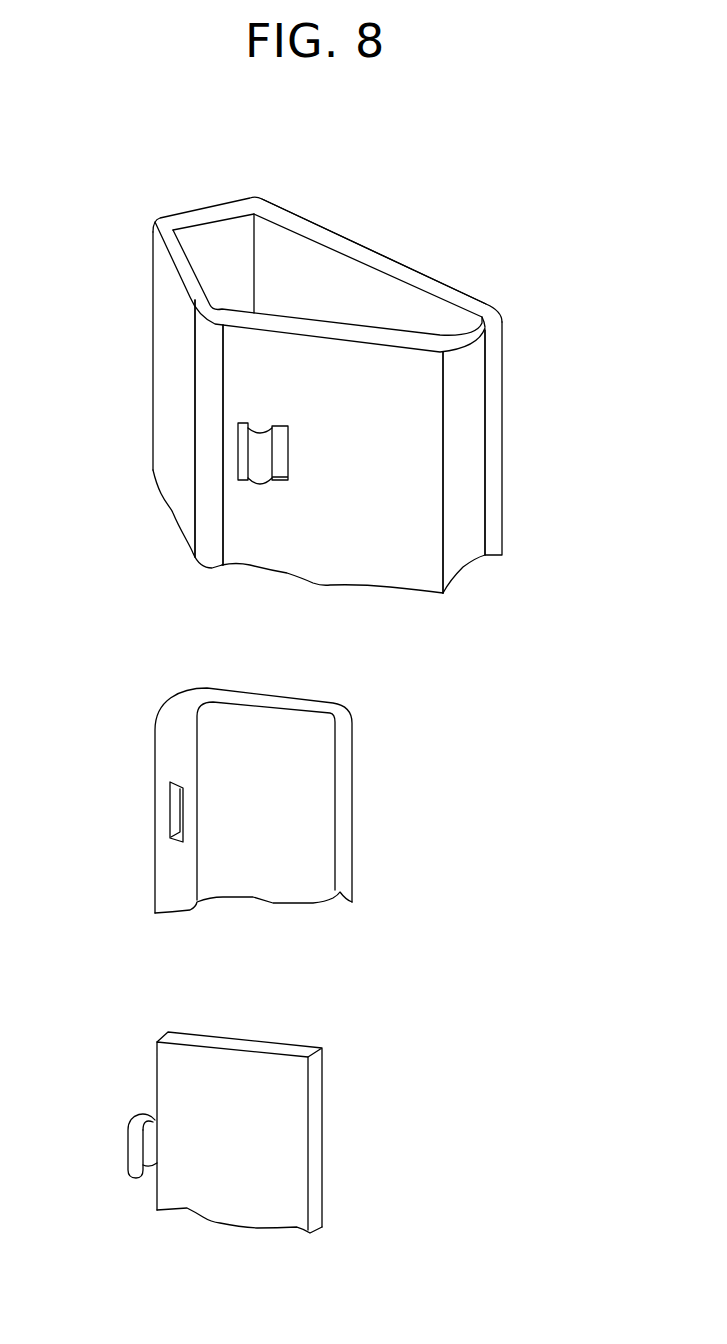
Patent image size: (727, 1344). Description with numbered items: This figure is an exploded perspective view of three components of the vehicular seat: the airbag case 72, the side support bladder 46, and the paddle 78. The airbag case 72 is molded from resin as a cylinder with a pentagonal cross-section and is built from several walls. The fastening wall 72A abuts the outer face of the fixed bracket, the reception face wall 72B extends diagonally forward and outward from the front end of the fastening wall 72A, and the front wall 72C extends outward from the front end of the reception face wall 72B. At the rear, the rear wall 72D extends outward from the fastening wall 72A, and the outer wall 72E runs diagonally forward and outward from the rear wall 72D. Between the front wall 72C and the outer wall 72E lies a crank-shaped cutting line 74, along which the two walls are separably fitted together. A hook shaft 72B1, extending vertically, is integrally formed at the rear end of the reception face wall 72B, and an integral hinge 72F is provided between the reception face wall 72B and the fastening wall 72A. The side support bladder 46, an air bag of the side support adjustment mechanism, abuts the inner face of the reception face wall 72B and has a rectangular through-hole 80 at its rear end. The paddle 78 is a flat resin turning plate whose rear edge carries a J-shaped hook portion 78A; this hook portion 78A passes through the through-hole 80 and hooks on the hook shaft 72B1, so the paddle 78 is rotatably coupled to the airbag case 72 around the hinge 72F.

The airbag case 72 is at (372, 228).
The fastening wall 72A is at (167, 322).
The reception face wall 72B is at (318, 550).
The hook shaft 72B1 is at (263, 458).
The front wall 72C is at (473, 492).
The rear wall 72D is at (192, 210).
The outer wall 72E is at (407, 263).
The integral hinge 72F is at (205, 393).
The cutting line 74 is at (487, 402).
The side support bladder 46 is at (352, 815).
The rectangular through-hole 80 is at (170, 825).
The paddle 78 is at (320, 1133).
The hook portion 78A is at (130, 1143).